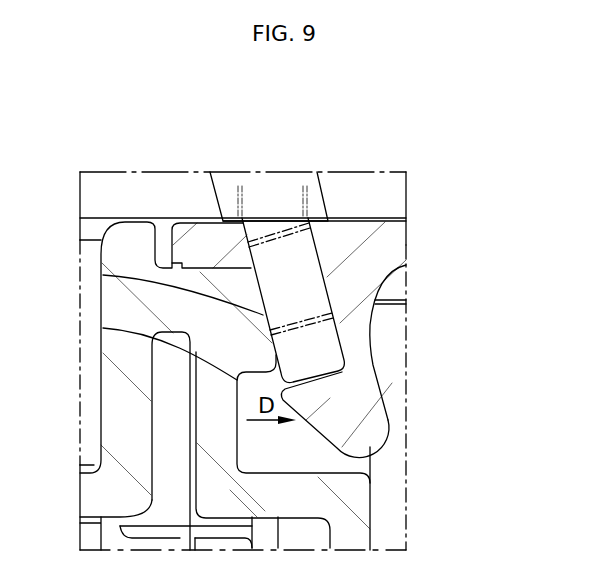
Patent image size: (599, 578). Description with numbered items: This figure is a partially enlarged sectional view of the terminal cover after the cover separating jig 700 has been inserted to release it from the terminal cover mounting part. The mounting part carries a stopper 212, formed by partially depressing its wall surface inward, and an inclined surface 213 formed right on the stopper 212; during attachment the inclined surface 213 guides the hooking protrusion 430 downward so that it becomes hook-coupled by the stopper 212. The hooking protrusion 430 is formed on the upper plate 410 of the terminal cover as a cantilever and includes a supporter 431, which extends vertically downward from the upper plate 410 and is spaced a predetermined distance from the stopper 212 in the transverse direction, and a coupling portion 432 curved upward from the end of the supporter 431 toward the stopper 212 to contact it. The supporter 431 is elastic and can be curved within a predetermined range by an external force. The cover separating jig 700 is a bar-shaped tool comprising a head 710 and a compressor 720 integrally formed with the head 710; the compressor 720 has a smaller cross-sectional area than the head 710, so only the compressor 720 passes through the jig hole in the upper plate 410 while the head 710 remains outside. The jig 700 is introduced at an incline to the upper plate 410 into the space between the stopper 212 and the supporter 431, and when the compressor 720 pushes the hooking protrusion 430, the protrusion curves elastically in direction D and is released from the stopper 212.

The upper plate 410 is at (388, 238).
The stopper 212 is at (103, 328).
The inclined surface 213 is at (103, 275).
The cover separating jig 700 is at (289, 232).
The head 710 is at (285, 192).
The compressor 720 is at (302, 300).
The hooking protrusion 430 is at (413, 361).
The supporter 431 is at (367, 355).
The coupling portion 432 is at (307, 408).